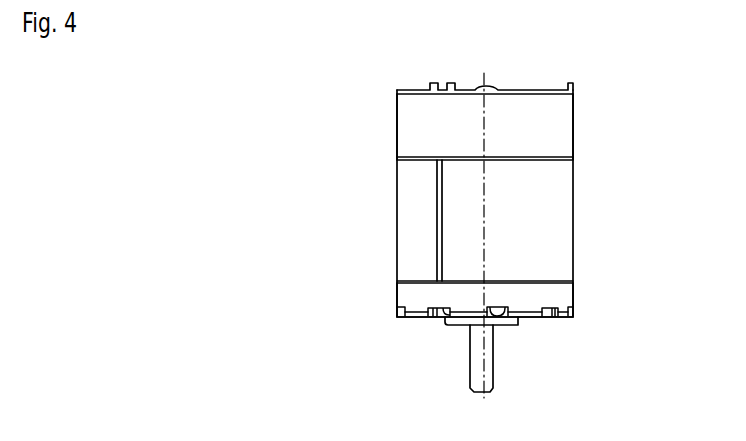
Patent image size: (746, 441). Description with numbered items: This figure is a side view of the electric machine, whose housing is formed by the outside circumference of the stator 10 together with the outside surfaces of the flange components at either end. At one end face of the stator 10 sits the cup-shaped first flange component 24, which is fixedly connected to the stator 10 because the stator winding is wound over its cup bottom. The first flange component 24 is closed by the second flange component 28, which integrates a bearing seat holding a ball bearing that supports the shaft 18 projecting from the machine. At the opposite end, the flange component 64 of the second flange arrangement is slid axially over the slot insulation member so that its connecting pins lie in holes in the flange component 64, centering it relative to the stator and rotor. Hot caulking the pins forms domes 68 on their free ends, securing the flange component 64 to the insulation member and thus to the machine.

The stator 10 is at (547, 224).
The shaft 18 is at (488, 363).
The first flange component 24 is at (550, 121).
The second flange component 28 is at (535, 89).
The flange component 64 is at (543, 293).
The domes 68 is at (443, 306).